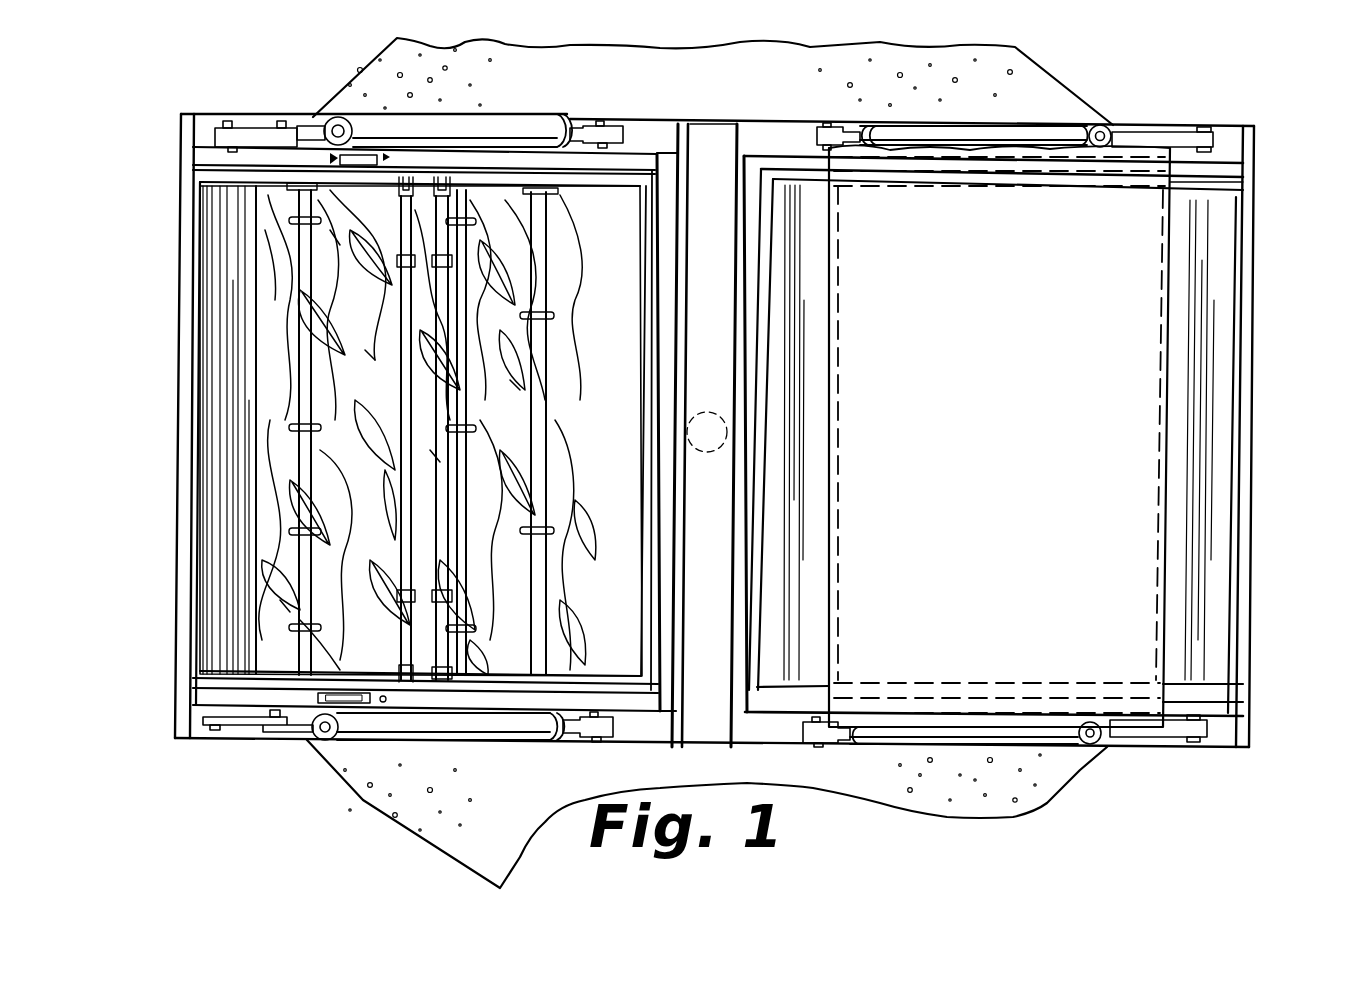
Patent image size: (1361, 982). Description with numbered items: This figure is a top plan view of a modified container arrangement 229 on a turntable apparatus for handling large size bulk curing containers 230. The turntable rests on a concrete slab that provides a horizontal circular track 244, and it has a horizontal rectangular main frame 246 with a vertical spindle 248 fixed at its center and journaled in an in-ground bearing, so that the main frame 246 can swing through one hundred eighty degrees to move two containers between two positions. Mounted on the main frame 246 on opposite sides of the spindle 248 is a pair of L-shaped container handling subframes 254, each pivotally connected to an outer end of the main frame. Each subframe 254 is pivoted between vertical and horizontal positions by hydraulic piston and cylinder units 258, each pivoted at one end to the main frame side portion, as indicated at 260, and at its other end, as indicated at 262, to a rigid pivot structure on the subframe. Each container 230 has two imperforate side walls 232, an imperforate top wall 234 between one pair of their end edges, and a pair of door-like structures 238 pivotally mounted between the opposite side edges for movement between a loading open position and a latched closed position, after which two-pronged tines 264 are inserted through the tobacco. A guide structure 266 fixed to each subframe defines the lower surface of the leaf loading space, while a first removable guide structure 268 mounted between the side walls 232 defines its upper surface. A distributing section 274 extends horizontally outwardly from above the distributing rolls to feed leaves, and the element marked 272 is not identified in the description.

The modified container arrangement 229 is at (777, 95).
The container 230 is at (763, 213).
The imperforate side walls 232 is at (192, 173).
The imperforate top wall 234 is at (758, 350).
The door-like structures 238 is at (383, 352).
The horizontal circular track 244 is at (380, 820).
The main frame 246 is at (708, 742).
The vertical spindle 248 is at (711, 452).
The container handling subframes 254 is at (770, 122).
The hydraulic piston and cylinder units 258 is at (996, 124).
The pivot connection to main frame 260 is at (628, 122).
The pivot connection to subframe 262 is at (304, 120).
The two-pronged tines 264 is at (390, 528).
The guide structure 266 is at (215, 488).
The first removable guide structure 268 is at (810, 301).
The right door 272 is at (1176, 301).
The distributing section 274 is at (1020, 443).